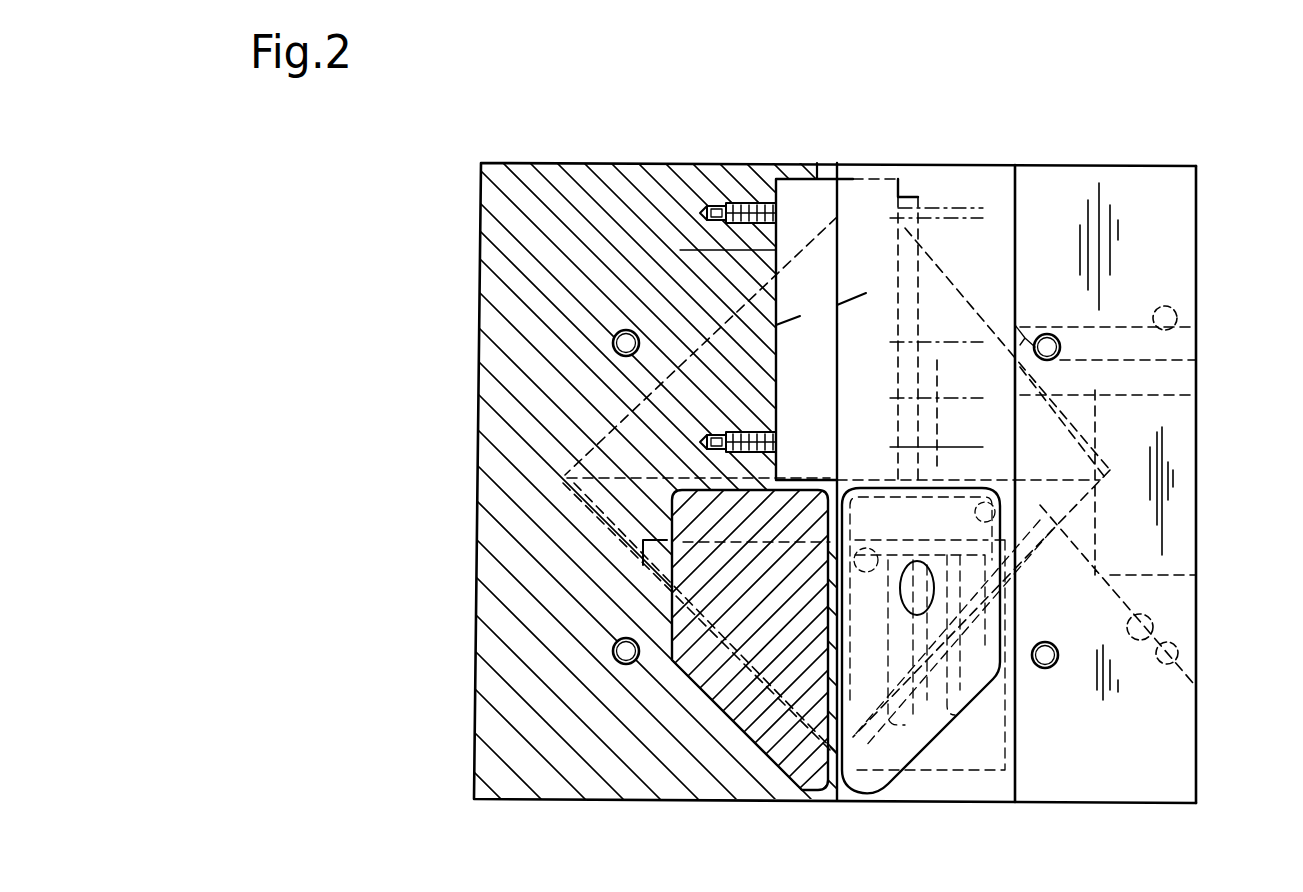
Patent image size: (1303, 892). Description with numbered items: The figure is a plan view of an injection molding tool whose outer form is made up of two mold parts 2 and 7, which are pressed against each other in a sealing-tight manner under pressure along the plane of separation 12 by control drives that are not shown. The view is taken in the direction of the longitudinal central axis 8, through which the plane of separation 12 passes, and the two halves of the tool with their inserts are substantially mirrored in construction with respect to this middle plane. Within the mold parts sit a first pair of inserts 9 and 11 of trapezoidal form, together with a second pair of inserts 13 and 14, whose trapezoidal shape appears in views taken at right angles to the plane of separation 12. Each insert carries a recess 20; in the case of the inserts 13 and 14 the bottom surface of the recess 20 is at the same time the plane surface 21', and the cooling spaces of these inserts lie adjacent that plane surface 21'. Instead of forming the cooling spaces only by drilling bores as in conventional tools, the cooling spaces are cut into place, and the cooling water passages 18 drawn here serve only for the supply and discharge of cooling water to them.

The mold part 2 is at (537, 775).
The mold part 7 is at (994, 775).
The longitudinal central axis 8 is at (790, 513).
The insert 9 is at (798, 772).
The insert 11 is at (870, 787).
The plane of separation 12 is at (866, 293).
The insert 13 is at (798, 193).
The insert 14 is at (876, 195).
The cooling water passages 18 is at (937, 413).
The recess 20 is at (800, 316).
The plane surface 21' is at (806, 271).